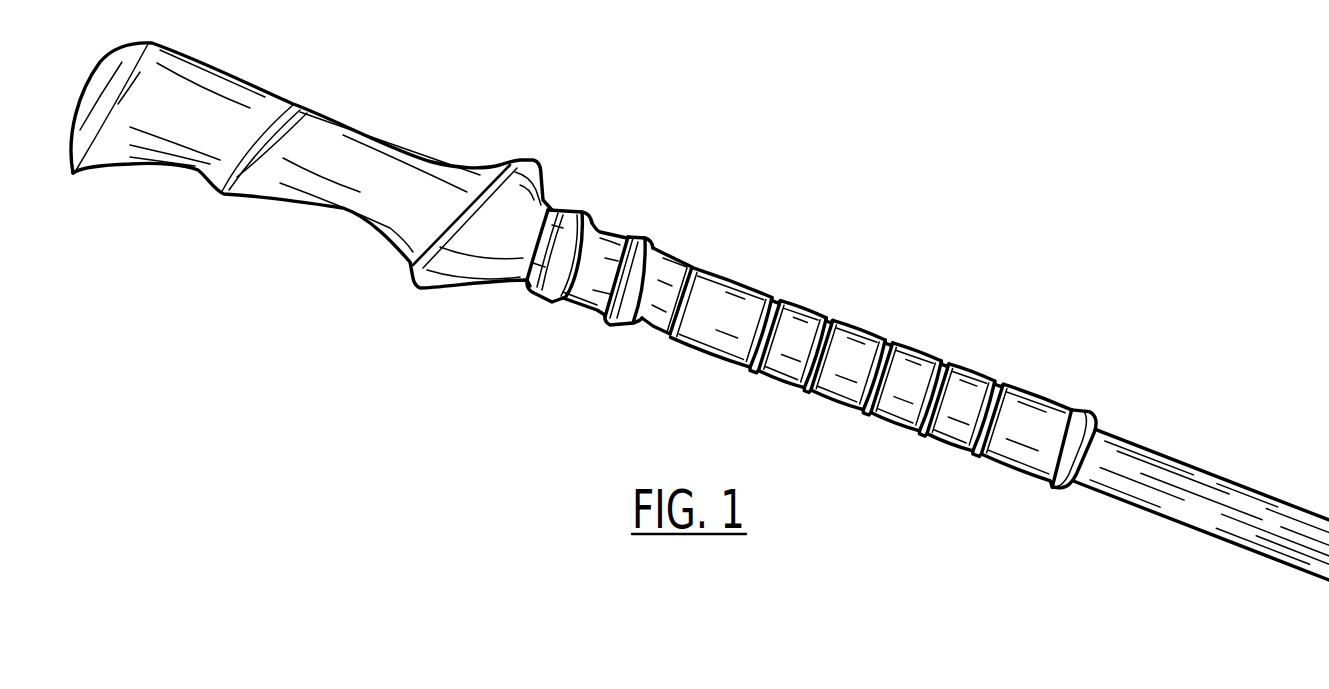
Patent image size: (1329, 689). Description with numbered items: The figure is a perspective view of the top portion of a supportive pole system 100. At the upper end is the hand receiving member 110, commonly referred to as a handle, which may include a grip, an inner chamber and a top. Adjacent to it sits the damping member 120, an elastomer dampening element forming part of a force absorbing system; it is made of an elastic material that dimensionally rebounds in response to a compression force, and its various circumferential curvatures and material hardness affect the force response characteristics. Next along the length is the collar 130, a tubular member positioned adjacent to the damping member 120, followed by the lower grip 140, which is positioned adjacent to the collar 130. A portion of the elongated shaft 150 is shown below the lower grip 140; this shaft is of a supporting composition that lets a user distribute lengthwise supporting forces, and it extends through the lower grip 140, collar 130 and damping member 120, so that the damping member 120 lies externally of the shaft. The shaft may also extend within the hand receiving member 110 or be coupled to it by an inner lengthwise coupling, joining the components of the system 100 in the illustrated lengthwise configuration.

The supportive pole system 100 is at (835, 165).
The hand receiving member 110 is at (278, 225).
The damping member 120 is at (575, 315).
The collar 130 is at (670, 295).
The lower grip 140 is at (892, 421).
The elongated shaft 150 is at (1208, 510).